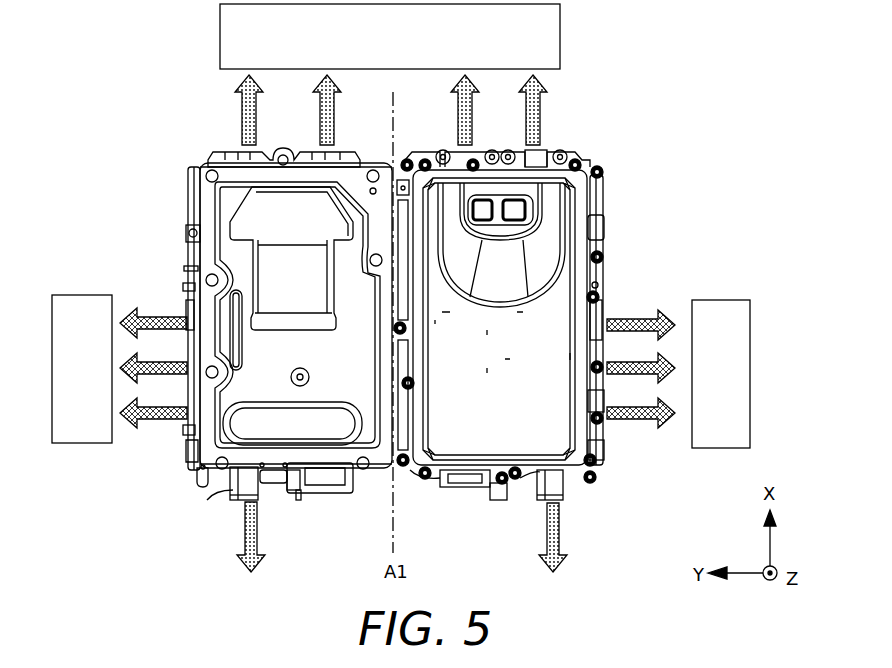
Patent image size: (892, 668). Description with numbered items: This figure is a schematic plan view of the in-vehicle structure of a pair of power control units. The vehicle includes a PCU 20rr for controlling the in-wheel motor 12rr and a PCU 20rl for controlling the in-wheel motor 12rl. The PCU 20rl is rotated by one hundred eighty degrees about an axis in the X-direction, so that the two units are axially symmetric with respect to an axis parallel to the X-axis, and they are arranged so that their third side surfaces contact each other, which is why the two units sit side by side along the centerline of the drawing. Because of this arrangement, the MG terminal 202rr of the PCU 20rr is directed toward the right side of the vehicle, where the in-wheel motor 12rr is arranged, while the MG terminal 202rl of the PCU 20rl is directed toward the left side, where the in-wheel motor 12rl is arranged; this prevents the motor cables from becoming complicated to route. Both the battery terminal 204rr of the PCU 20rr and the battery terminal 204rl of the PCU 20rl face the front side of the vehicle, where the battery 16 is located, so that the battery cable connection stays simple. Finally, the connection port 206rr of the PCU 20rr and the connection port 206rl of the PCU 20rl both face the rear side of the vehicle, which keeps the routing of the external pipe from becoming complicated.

The battery 16 is at (390, 36).
The in-wheel motor 12rl is at (82, 369).
The in-wheel motor 12rr is at (721, 374).
The PCU 20rl is at (230, 290).
The PCU 20rr is at (558, 297).
The MG terminal 202rl is at (174, 292).
The MG terminal 202rr is at (603, 318).
The battery terminal 204rl is at (237, 150).
The battery terminal 204rr is at (547, 150).
The connection port 206rl is at (230, 487).
The connection port 206rr is at (565, 494).